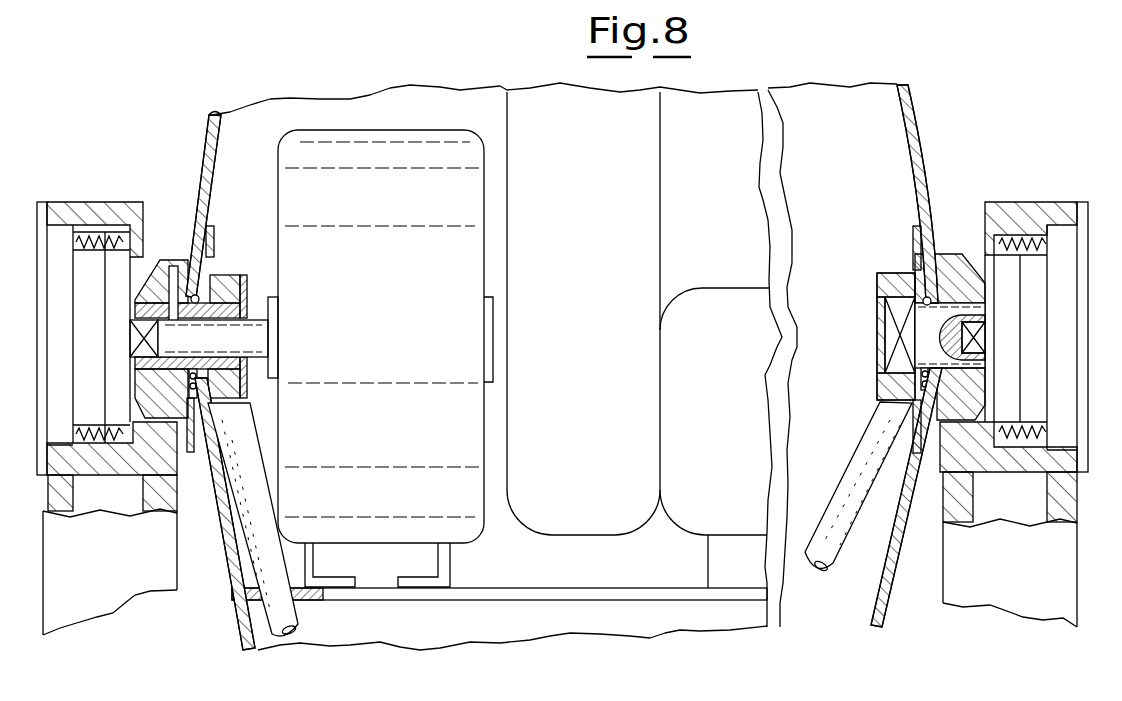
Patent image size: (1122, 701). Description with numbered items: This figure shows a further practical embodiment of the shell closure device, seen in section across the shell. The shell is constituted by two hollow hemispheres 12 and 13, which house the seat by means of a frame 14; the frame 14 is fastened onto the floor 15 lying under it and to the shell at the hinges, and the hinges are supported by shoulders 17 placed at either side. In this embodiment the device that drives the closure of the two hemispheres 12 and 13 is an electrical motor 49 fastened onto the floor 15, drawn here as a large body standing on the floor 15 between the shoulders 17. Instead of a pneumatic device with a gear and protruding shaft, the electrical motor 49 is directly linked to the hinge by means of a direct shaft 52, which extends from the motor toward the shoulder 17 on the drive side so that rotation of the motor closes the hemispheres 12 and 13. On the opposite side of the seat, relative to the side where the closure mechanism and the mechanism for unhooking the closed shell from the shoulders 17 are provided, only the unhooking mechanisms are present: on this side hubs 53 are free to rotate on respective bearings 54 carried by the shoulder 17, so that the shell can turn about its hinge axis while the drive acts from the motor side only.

The hollow hemisphere 12 is at (912, 114).
The hollow hemisphere 13 is at (890, 587).
The frame 14 is at (299, 614).
The floor 15 is at (530, 593).
The shoulders 17 is at (112, 592).
The electrical motor 49 is at (399, 130).
The direct shaft 52 is at (252, 333).
The hubs 53 is at (940, 323).
The bearings 54 is at (880, 310).